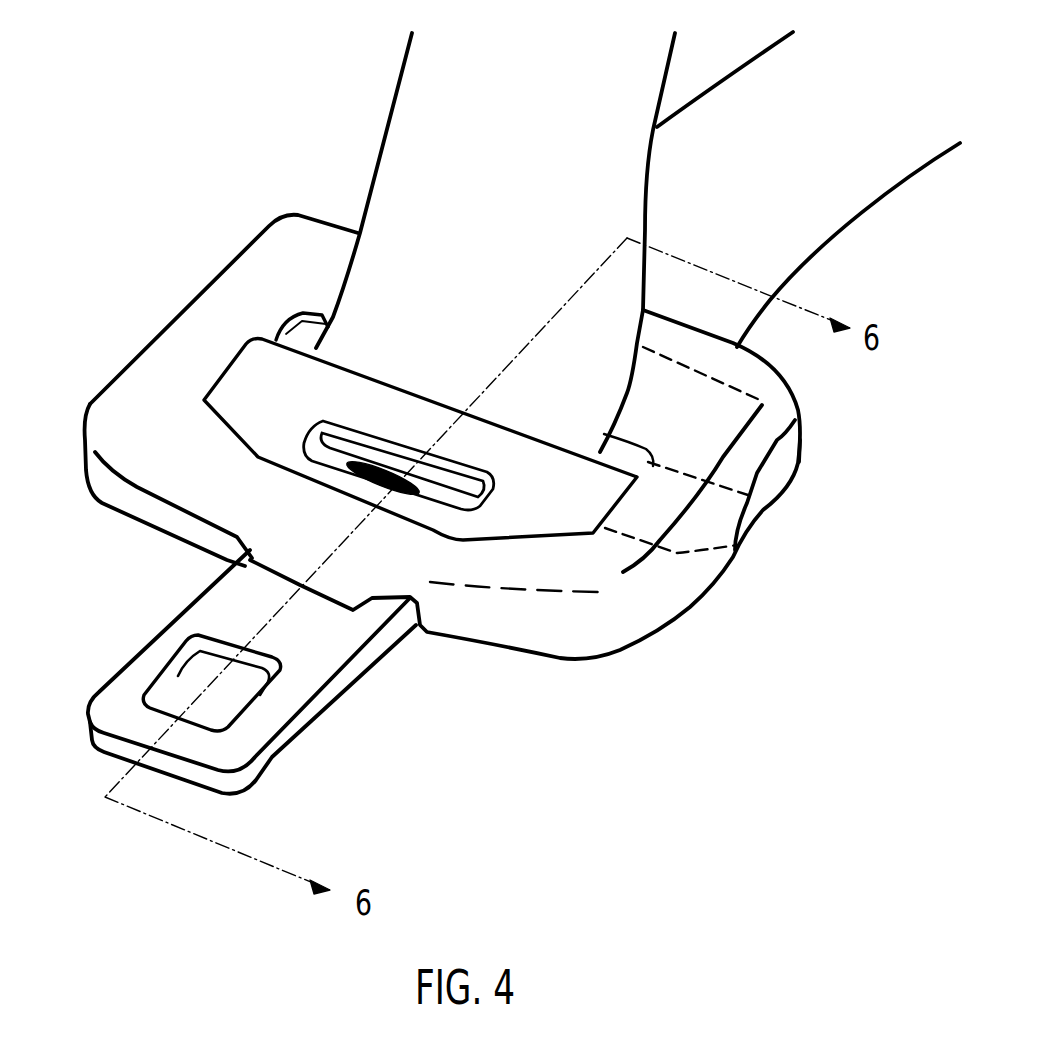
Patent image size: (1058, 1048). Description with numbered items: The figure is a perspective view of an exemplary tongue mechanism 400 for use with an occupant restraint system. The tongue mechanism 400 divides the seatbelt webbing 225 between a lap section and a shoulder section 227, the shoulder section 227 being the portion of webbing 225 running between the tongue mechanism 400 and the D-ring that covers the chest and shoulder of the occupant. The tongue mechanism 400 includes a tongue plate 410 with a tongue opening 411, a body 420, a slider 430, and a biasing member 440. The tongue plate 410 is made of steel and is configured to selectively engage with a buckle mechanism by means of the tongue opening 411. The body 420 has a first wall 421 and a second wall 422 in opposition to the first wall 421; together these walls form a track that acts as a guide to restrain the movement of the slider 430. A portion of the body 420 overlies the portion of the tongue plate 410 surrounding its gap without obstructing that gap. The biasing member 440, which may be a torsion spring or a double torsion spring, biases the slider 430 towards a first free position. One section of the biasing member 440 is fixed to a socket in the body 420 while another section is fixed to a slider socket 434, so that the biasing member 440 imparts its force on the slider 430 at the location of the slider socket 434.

The tongue mechanism 400 is at (111, 98).
The webbing 225 is at (637, 249).
The shoulder section 227 is at (412, 88).
The body 420 is at (530, 627).
The first wall 421 is at (603, 540).
The second wall 422 is at (228, 362).
The slider 430 is at (585, 479).
The slider socket 434 is at (399, 404).
The biasing member 440 is at (390, 483).
The tongue plate 410 is at (243, 733).
The tongue opening 411 is at (190, 680).